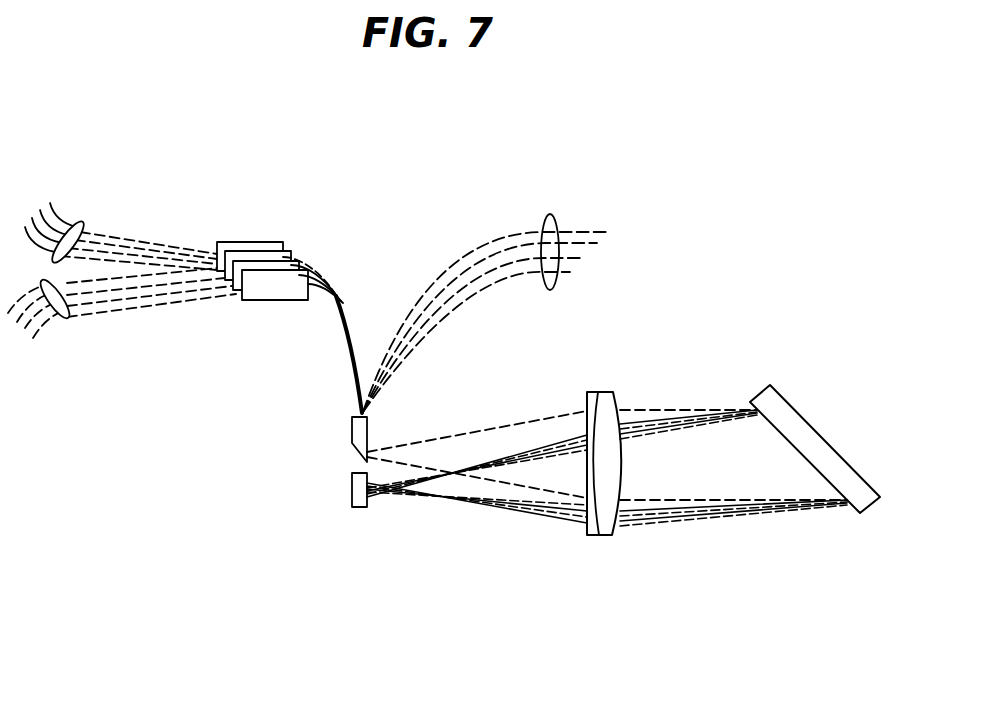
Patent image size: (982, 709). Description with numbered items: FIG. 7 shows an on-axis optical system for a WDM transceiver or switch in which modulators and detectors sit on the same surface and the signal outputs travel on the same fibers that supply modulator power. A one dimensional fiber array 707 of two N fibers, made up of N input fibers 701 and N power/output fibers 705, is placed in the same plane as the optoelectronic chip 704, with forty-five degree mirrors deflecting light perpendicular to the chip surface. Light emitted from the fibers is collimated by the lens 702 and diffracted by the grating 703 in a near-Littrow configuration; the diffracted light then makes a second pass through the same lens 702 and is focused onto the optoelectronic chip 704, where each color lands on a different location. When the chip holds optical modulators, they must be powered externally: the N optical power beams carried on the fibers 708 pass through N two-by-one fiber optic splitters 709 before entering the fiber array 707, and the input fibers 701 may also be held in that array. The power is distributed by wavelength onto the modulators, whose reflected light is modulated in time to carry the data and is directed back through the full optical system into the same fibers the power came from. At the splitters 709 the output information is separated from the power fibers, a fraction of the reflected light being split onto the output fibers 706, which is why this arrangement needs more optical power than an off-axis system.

The input fibers 701 is at (550, 213).
The lens 702 is at (605, 392).
The grating 703 is at (803, 415).
The optoelectronic chip 704 is at (358, 508).
The power/output fibers 705 is at (336, 295).
The output fibers 706 is at (68, 320).
The fiber array 707 is at (352, 430).
The fibers 708 is at (82, 223).
The 2×1 fiber optic splitters 709 is at (247, 242).